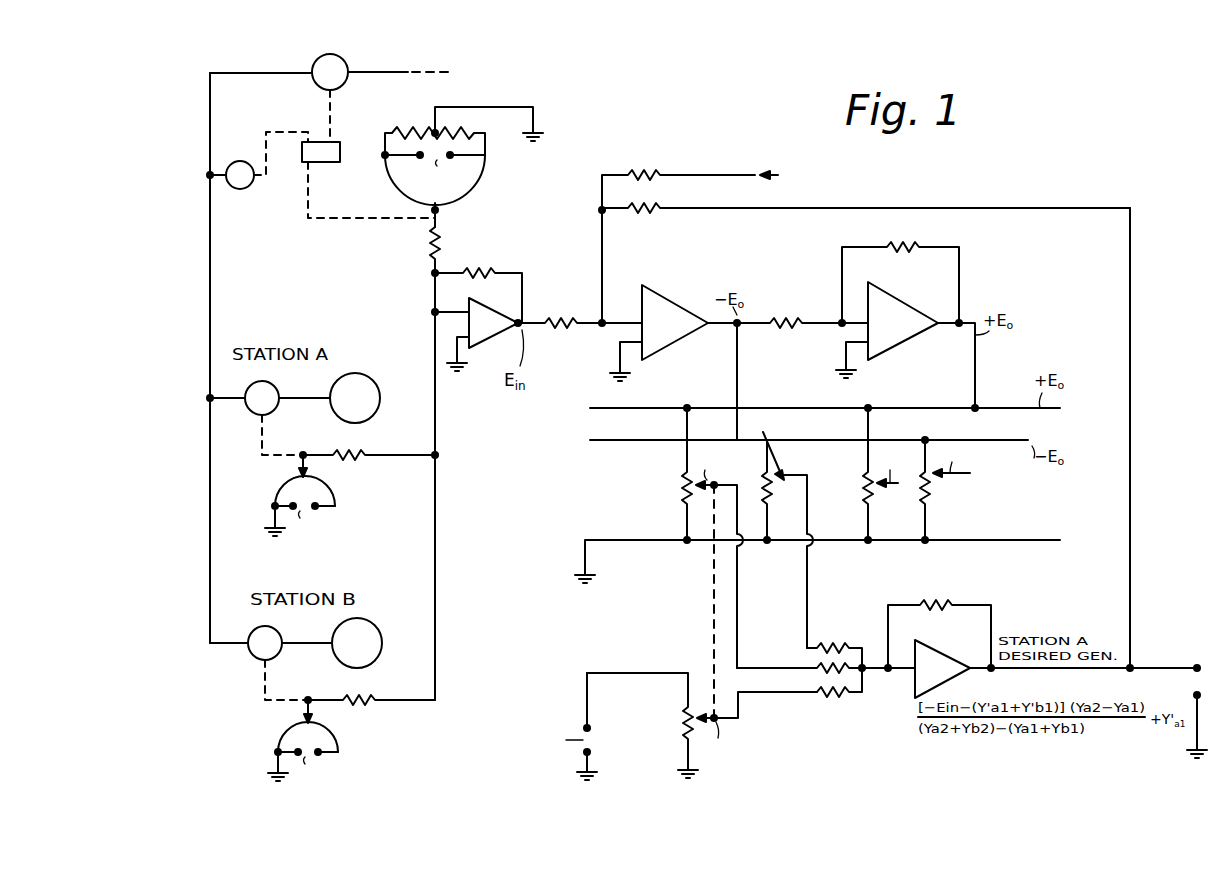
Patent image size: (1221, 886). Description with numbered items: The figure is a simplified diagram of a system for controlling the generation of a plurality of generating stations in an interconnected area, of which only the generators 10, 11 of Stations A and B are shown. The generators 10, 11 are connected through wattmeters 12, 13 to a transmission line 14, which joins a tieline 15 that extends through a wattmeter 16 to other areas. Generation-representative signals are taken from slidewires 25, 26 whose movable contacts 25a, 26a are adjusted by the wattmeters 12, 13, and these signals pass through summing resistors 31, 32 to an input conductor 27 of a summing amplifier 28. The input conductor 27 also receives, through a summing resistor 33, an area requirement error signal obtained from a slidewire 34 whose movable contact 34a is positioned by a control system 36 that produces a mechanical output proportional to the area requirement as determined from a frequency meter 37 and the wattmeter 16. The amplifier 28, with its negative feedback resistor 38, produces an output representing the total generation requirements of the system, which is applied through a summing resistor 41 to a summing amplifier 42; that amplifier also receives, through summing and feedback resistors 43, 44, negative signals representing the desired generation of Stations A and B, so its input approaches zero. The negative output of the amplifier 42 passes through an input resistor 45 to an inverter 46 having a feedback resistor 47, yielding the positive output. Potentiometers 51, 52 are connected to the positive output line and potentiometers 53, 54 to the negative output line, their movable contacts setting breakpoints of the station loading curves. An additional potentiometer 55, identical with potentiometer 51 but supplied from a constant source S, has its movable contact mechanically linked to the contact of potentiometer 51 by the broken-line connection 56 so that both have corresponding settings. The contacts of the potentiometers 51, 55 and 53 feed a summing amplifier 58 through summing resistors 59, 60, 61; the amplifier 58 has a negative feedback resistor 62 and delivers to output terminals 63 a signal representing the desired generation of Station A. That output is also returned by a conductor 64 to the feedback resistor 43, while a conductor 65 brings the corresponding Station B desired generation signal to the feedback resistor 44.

The generator 10 is at (338, 384).
The generator 11 is at (337, 629).
The wattmeter 12 is at (252, 388).
The wattmeter 13 is at (254, 634).
The transmission line 14 is at (210, 262).
The tieline 15 is at (240, 73).
The wattmeter 16 is at (342, 60).
The slidewire 25 is at (278, 491).
The movable contact 25a is at (308, 466).
The slidewire 26 is at (278, 744).
The movable contact 26a is at (304, 712).
The input conductor 27 is at (435, 350).
The summing amplifier 28 is at (483, 330).
The summing resistor 31 is at (350, 452).
The summing resistor 32 is at (360, 705).
The summing resistor 33 is at (430, 248).
The slidewire 34 is at (476, 190).
The movable contact 34a is at (440, 211).
The control system 36 is at (328, 150).
The frequency meter 37 is at (248, 186).
The negative feedback resistor 38 is at (468, 270).
The summing resistor 41 is at (556, 330).
The summing amplifier 42 is at (666, 310).
The summing and feedback resistor 43 is at (640, 215).
The summing and feedback resistor 44 is at (643, 172).
The input resistor 45 is at (790, 318).
The inverter 46 is at (896, 303).
The feedback resistor 47 is at (895, 244).
The potentiometer 51 is at (680, 486).
The potentiometer 52 is at (862, 482).
The potentiometer 53 is at (762, 478).
The potentiometer 54 is at (919, 496).
The potentiometer 55 is at (684, 713).
The connection 56 is at (714, 622).
The summing amplifier 58 is at (930, 652).
The summing resistor 59 is at (818, 670).
The summing resistor 60 is at (835, 698).
The summing resistor 61 is at (830, 645).
The negative feedback resistor 62 is at (937, 602).
The output terminals 63 is at (1194, 683).
The conductor 64 is at (1133, 418).
The conductor 65 is at (705, 172).